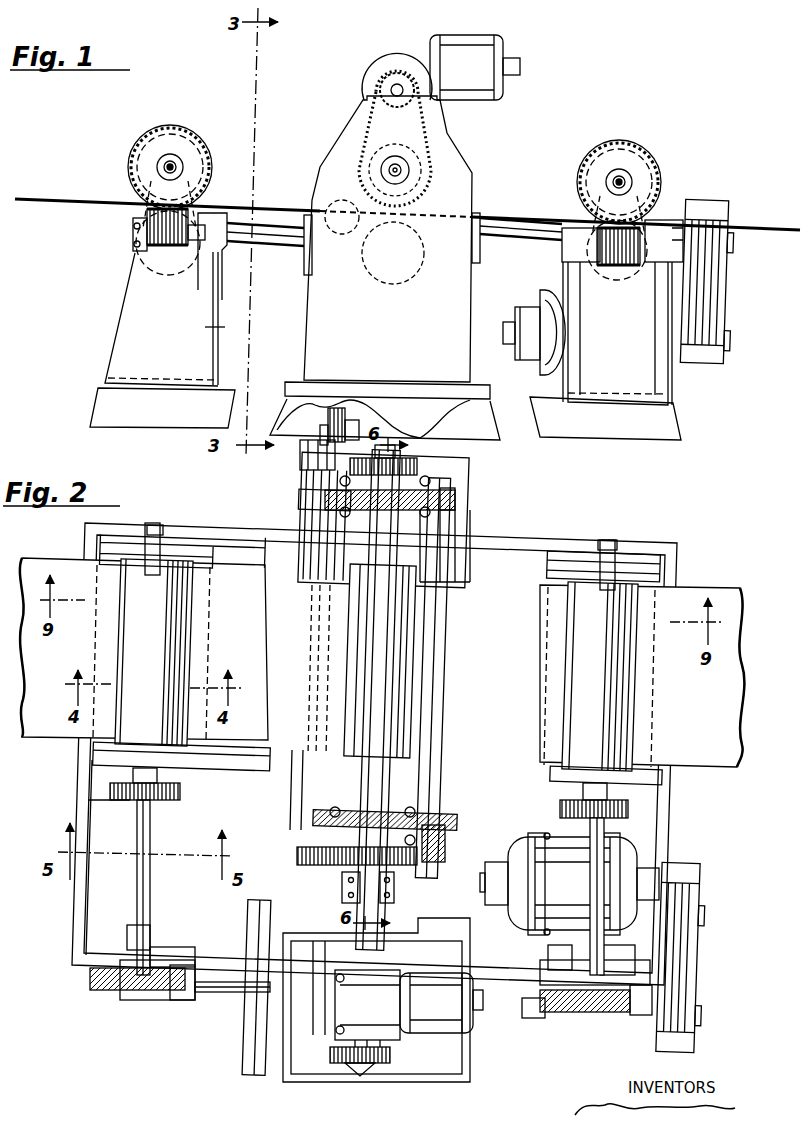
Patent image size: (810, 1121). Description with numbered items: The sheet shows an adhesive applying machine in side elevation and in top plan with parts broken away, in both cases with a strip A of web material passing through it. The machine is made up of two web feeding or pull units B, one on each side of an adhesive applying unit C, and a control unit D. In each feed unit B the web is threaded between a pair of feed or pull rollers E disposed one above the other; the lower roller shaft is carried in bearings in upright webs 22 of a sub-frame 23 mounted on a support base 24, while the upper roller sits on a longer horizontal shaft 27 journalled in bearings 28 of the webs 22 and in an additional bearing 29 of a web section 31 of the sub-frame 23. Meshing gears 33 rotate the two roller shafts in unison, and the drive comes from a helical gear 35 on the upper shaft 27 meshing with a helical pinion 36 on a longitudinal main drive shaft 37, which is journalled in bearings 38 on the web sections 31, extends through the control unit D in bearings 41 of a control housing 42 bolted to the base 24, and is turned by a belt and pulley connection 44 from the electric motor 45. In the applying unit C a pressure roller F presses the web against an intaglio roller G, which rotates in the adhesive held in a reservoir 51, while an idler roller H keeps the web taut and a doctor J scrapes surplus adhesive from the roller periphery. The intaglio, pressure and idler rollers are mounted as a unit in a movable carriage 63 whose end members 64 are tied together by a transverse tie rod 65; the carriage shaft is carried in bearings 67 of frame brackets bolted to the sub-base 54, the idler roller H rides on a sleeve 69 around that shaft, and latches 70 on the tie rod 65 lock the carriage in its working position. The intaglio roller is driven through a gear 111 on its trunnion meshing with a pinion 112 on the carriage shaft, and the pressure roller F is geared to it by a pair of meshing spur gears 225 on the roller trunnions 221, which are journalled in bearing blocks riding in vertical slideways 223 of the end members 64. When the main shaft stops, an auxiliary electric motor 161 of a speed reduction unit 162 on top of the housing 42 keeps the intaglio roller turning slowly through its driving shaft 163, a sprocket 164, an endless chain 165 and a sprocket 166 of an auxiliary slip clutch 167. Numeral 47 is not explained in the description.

In FIG. 1, the strip of web material A is at (407, 203).
In FIG. 2, the strip of web material A is at (386, 648).
In FIG. 1, the web feeding or pull unit B is at (402, 334).
In FIG. 2, the web feeding or pull unit B is at (366, 883).
In FIG. 2, the adhesive applying unit C is at (348, 519).
In FIG. 1, the control unit D is at (387, 247).
In FIG. 2, the control unit D is at (356, 1008).
In FIG. 1, the feed or pull rollers E is at (395, 206).
In FIG. 2, the feed or pull rollers E is at (376, 665).
In FIG. 1, the pressure roller F is at (457, 187).
In FIG. 2, the pressure roller F is at (380, 661).
In FIG. 1, the intaglio roller G is at (393, 271).
In FIG. 2, the intaglio roller G is at (449, 557).
In FIG. 1, the idler roller H is at (342, 237).
In FIG. 2, the idler roller H is at (289, 555).
In FIG. 2, the doctor J is at (304, 525).
In FIG. 2, the upright webs 22 is at (185, 548).
In FIG. 1, the sub-frame 23 is at (118, 320).
In FIG. 2, the sub-frame 23 is at (690, 826).
In FIG. 1, the support base 24 is at (105, 405).
In FIG. 2, the support base 24 is at (80, 777).
In FIG. 1, the horizontal shaft 27 is at (172, 166).
In FIG. 1, the bearings 28 is at (170, 167).
In FIG. 2, the bearings 28 is at (160, 530).
In FIG. 2, the additional bearing 29 is at (335, 943).
In FIG. 1, the web section 31 is at (411, 350).
In FIG. 2, the web section 31 is at (165, 950).
In FIG. 1, the meshing gears 33 is at (133, 236).
In FIG. 2, the meshing gears 33 is at (180, 790).
In FIG. 1, the helical gear 35 is at (138, 150).
In FIG. 2, the helical gear 35 is at (100, 990).
In FIG. 1, the helical pinion 36 is at (147, 218).
In FIG. 2, the helical pinion 36 is at (130, 995).
In FIG. 1, the main drive shaft 37 is at (290, 247).
In FIG. 2, the main drive shaft 37 is at (230, 992).
In FIG. 1, the bearings 38 is at (214, 233).
In FIG. 2, the bearings 38 is at (183, 1000).
In FIG. 1, the bearings 41 is at (306, 270).
In FIG. 2, the bearings 41 is at (250, 1010).
In FIG. 1, the control housing 42 is at (325, 338).
In FIG. 2, the control housing 42 is at (312, 1030).
In FIG. 1, the belt and pulley connection 44 is at (728, 302).
In FIG. 2, the belt and pulley connection 44 is at (701, 922).
In FIG. 1, the electric motor 45 is at (548, 360).
In FIG. 2, the electric motor 45 is at (569, 884).
In FIG. 2, the pump 47 is at (312, 478).
In FIG. 2, the reservoir 51 is at (445, 538).
In FIG. 2, the sub-base 54 is at (470, 515).
In FIG. 2, the movable carriage 63 is at (440, 825).
In FIG. 2, the end members 64 is at (455, 500).
In FIG. 2, the transverse tie rod 65 is at (440, 695).
In FIG. 2, the bearings 67 is at (300, 850).
In FIG. 2, the sleeve 69 is at (330, 548).
In FIG. 2, the latches 70 is at (440, 490).
In FIG. 2, the gear 111 is at (415, 865).
In FIG. 2, the pinion 112 is at (300, 860).
In FIG. 1, the auxiliary electric motor 161 is at (512, 50).
In FIG. 2, the auxiliary electric motor 161 is at (441, 1003).
In FIG. 1, the speed reduction unit 162 is at (390, 68).
In FIG. 2, the speed reduction unit 162 is at (385, 1032).
In FIG. 1, the driving shaft 163 is at (392, 88).
In FIG. 2, the driving shaft 163 is at (360, 1076).
In FIG. 1, the sprocket 164 is at (383, 97).
In FIG. 2, the sprocket 164 is at (345, 1063).
In FIG. 1, the endless chain 165 is at (372, 125).
In FIG. 2, the endless chain 165 is at (390, 1063).
In FIG. 1, the sprocket 166 is at (398, 142).
In FIG. 1, the auxiliary slip clutch 167 is at (386, 170).
In FIG. 2, the trunnions 221 is at (370, 585).
In FIG. 2, the vertical slideways 223 is at (440, 492).
In FIG. 2, the meshing spur gears 225 is at (400, 460).